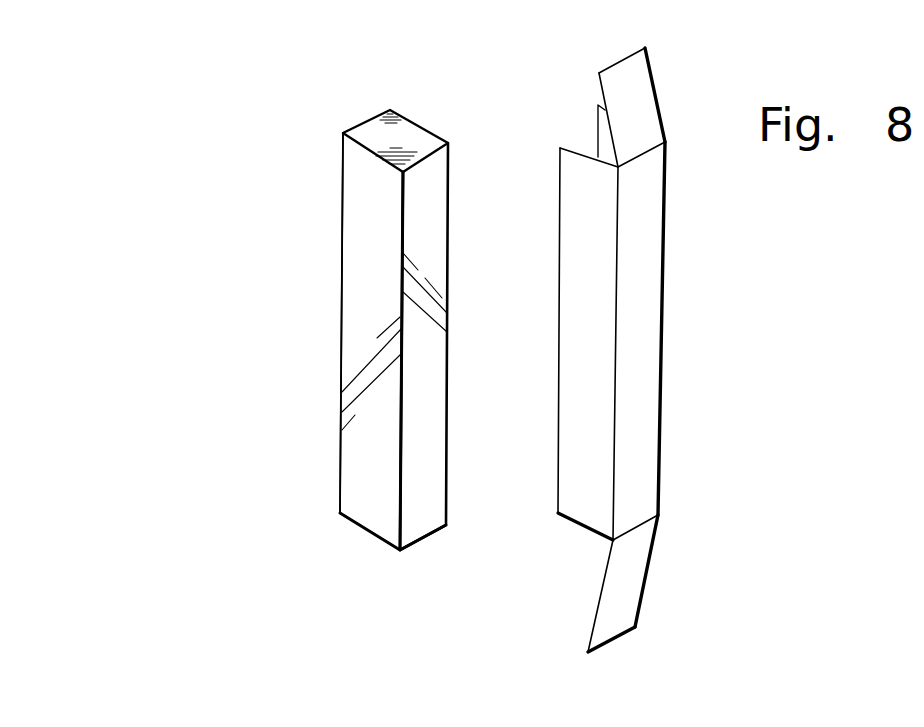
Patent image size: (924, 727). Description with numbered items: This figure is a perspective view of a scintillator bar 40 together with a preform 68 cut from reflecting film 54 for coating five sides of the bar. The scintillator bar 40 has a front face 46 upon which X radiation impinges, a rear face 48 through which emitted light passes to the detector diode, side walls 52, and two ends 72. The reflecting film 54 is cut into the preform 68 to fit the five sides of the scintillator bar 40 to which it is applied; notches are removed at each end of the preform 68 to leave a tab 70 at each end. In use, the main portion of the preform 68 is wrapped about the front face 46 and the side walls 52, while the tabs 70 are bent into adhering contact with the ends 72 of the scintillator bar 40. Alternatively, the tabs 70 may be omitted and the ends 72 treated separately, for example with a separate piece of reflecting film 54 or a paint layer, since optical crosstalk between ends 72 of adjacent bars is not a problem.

The scintillator bar 40 is at (390, 332).
The front face 46 is at (435, 223).
The rear face 48 is at (342, 277).
The side walls 52 is at (360, 212).
The reflecting film 54 is at (678, 350).
The preform 68 is at (662, 360).
The tab 70 is at (638, 105).
The ends 72 is at (405, 135).